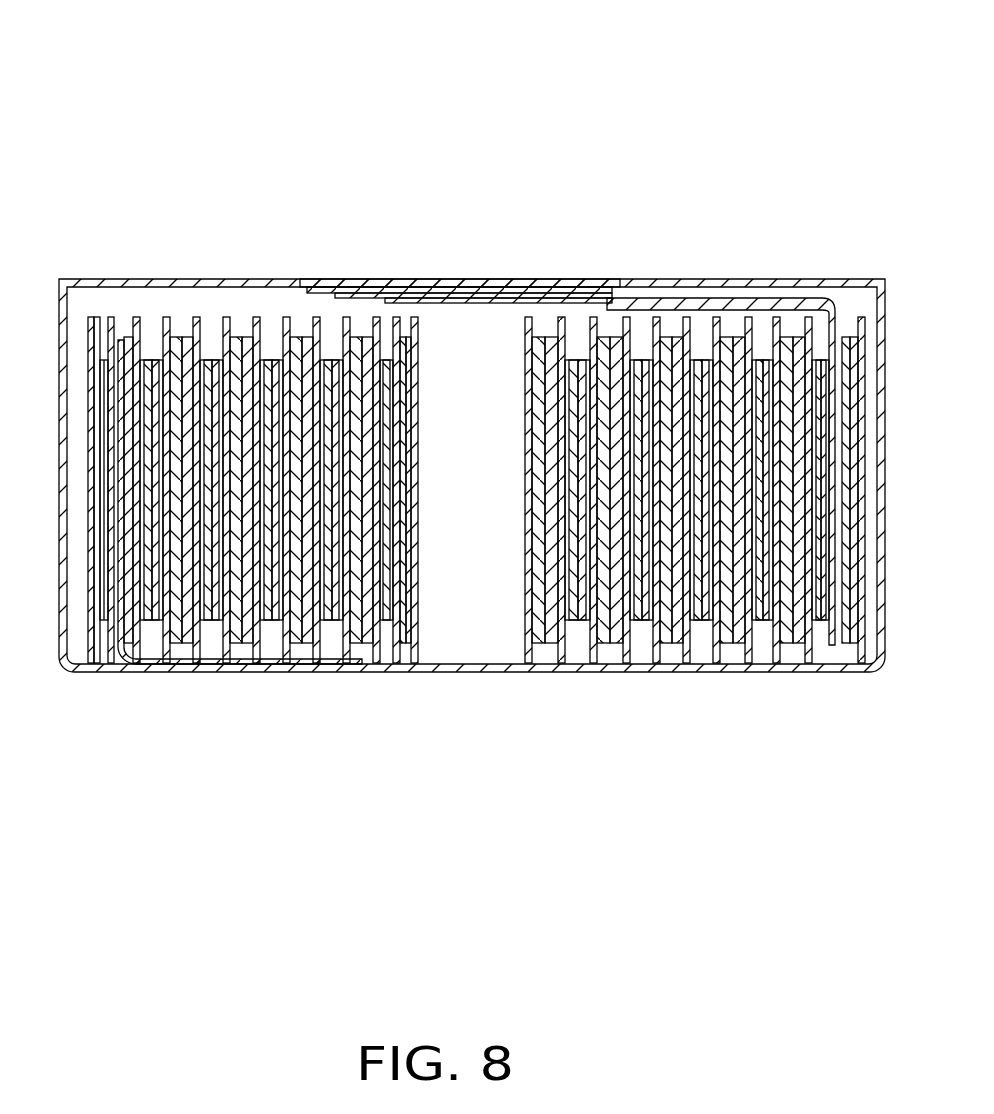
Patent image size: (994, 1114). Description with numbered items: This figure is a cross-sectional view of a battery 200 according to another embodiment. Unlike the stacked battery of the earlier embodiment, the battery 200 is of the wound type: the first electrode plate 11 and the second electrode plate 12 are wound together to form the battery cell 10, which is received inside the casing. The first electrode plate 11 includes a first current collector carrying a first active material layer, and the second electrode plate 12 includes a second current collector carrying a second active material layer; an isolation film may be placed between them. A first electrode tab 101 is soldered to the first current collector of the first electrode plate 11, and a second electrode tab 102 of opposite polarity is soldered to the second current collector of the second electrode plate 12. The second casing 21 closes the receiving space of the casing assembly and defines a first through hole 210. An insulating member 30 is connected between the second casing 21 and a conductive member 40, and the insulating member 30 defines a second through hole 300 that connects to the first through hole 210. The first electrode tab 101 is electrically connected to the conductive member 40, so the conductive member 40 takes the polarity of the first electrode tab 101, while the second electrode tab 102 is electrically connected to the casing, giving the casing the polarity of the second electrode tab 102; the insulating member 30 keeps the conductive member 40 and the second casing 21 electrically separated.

The battery 200 is at (441, 38).
The second casing 21 is at (688, 284).
The first through hole 210 is at (458, 282).
The insulating member 30 is at (325, 289).
The conductive member 40 is at (377, 296).
The second through hole 300 is at (532, 290).
The first electrode tab 101 is at (773, 305).
The second electrode tab 102 is at (240, 665).
The battery cell 10 is at (728, 773).
The first electrode plate 11 is at (780, 655).
The second electrode plate 12 is at (843, 640).